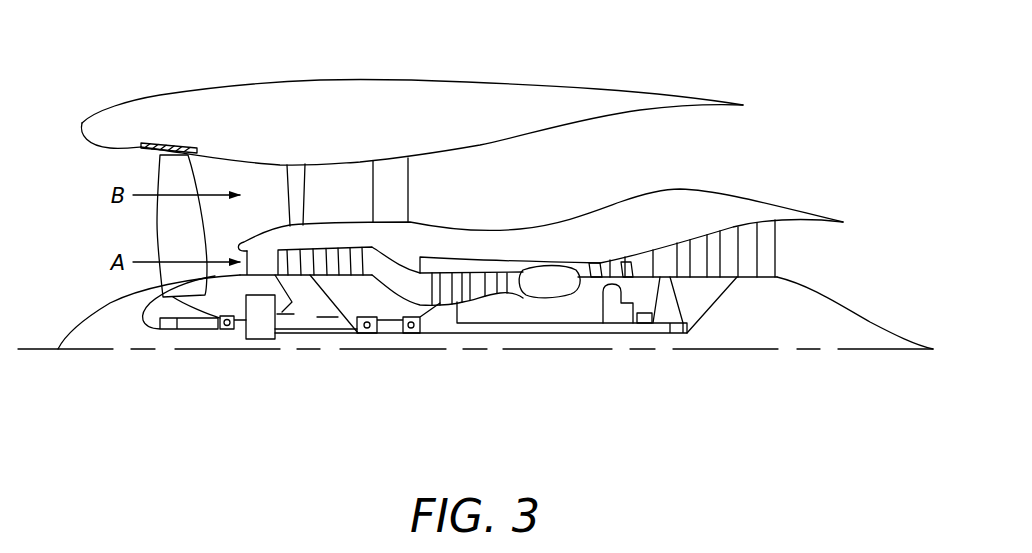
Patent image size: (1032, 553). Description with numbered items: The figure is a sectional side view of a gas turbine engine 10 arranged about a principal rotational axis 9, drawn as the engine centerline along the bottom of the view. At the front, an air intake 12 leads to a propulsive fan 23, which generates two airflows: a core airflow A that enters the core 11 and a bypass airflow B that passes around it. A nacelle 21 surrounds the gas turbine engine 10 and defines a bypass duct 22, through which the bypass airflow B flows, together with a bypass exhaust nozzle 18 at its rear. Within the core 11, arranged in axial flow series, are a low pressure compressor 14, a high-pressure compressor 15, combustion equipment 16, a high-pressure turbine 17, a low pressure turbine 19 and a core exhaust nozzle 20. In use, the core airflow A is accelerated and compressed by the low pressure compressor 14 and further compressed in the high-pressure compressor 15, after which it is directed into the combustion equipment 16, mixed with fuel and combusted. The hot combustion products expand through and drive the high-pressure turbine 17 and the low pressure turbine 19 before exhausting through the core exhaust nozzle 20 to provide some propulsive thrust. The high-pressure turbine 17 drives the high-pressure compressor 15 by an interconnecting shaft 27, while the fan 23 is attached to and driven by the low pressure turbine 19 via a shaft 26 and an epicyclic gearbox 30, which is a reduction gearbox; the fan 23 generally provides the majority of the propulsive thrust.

The principal rotational axis 9 is at (786, 349).
The gas turbine engine 10 is at (160, 95).
The core 11 is at (518, 247).
The air intake 12 is at (112, 173).
The low pressure compressor 14 is at (332, 250).
The high-pressure compressor 15 is at (472, 287).
The combustion equipment 16 is at (551, 285).
The high-pressure turbine 17 is at (606, 250).
The bypass exhaust nozzle 18 is at (722, 143).
The low pressure turbine 19 is at (747, 237).
The core exhaust nozzle 20 is at (803, 252).
The nacelle 21 is at (388, 90).
The bypass duct 22 is at (651, 161).
The propulsive fan 23 is at (163, 228).
The shaft 26 is at (468, 336).
The interconnecting shaft 27 is at (508, 325).
The epicyclic gearbox 30 is at (258, 329).